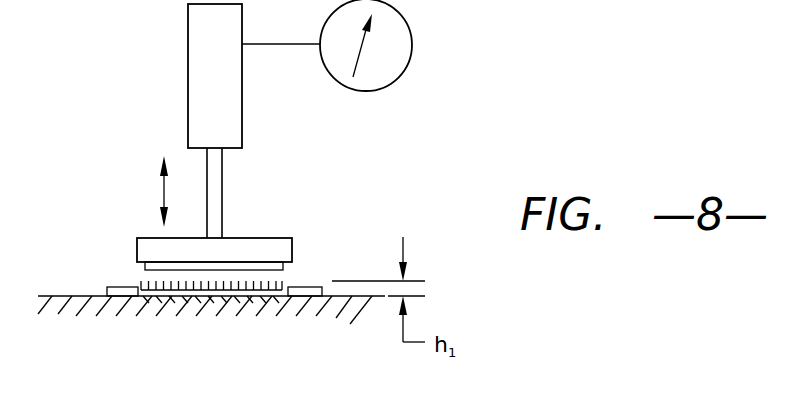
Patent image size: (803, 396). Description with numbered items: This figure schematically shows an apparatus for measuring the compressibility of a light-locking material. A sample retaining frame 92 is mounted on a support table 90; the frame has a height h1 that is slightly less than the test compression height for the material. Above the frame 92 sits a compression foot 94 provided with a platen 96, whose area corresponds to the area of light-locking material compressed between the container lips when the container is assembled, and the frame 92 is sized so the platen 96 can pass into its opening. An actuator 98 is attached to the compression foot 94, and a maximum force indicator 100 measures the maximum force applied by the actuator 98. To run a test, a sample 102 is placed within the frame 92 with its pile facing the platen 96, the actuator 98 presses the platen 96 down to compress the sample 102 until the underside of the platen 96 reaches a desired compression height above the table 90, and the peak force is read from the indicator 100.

The support table 90 is at (83, 297).
The sample retaining frame 92 is at (117, 287).
The compression foot 94 is at (258, 237).
The platen 96 is at (142, 266).
The actuator 98 is at (188, 22).
The maximum force indicator 100 is at (397, 35).
The sample 102 is at (238, 297).